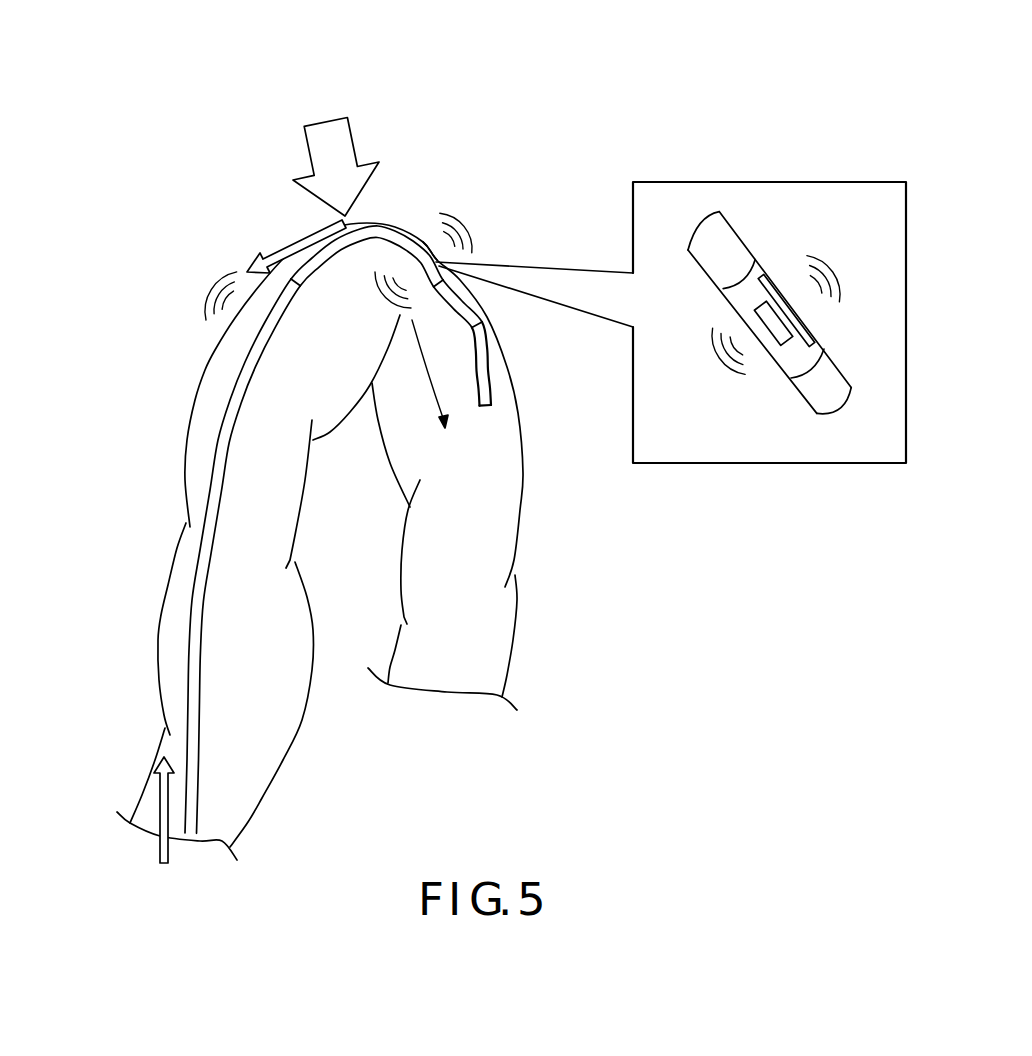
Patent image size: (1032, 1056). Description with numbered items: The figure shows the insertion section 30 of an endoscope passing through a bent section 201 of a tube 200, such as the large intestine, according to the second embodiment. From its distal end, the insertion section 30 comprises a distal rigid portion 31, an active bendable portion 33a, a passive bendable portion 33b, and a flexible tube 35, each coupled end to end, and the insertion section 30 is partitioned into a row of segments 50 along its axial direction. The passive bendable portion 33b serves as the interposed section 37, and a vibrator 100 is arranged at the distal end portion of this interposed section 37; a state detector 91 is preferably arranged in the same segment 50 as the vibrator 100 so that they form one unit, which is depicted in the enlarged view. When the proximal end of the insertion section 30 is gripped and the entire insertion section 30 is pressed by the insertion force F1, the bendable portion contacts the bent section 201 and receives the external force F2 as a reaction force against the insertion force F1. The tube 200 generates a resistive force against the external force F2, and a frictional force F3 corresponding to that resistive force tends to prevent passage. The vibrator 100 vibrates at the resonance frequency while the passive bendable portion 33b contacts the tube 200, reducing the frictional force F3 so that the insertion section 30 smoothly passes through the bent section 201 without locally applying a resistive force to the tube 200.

The insertion section 30 is at (210, 480).
The distal rigid portion 31 is at (492, 388).
The active bendable portion 33a is at (484, 323).
The passive bendable portion 33b is at (379, 226).
The flexible tube 35 is at (188, 656).
The interposed section 37 is at (484, 481).
The segment 50 is at (740, 313).
The state detector 91 is at (773, 288).
The vibrator 100 is at (773, 348).
The tube 200 is at (128, 787).
The bent section 201 is at (415, 223).
The insertion force F1 is at (159, 786).
The external force F2 is at (330, 118).
The frictional force F3 is at (291, 247).